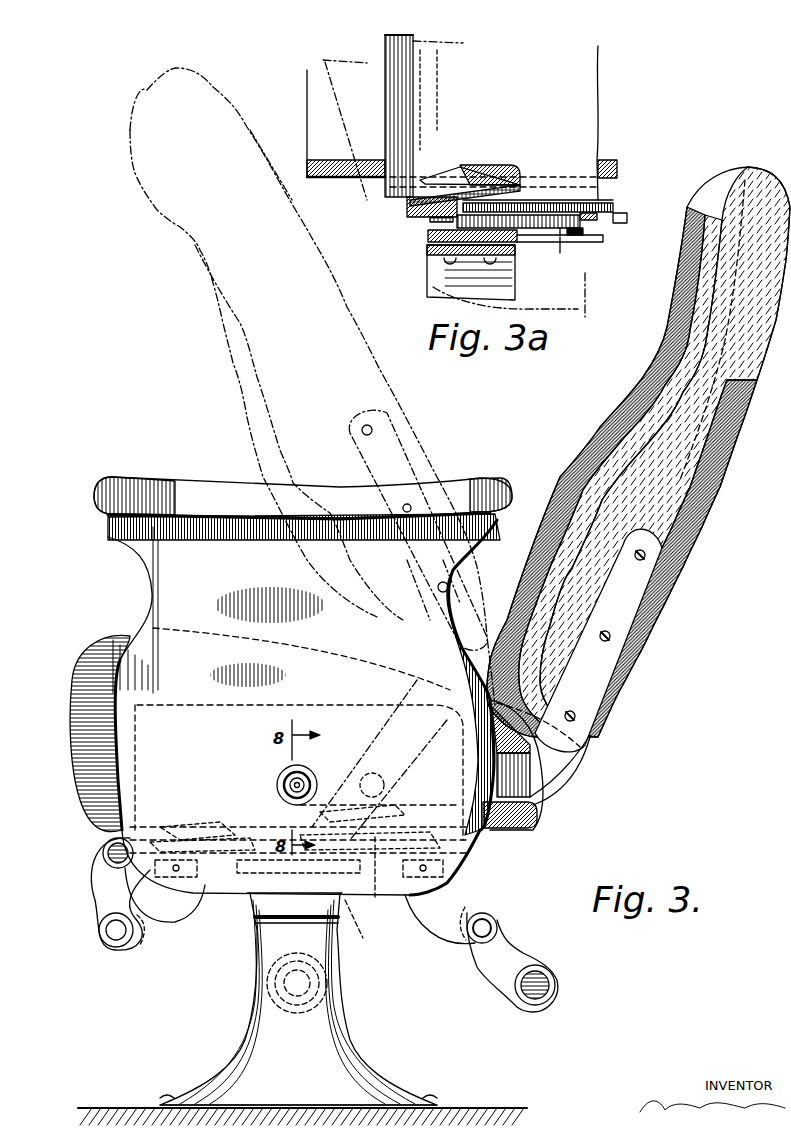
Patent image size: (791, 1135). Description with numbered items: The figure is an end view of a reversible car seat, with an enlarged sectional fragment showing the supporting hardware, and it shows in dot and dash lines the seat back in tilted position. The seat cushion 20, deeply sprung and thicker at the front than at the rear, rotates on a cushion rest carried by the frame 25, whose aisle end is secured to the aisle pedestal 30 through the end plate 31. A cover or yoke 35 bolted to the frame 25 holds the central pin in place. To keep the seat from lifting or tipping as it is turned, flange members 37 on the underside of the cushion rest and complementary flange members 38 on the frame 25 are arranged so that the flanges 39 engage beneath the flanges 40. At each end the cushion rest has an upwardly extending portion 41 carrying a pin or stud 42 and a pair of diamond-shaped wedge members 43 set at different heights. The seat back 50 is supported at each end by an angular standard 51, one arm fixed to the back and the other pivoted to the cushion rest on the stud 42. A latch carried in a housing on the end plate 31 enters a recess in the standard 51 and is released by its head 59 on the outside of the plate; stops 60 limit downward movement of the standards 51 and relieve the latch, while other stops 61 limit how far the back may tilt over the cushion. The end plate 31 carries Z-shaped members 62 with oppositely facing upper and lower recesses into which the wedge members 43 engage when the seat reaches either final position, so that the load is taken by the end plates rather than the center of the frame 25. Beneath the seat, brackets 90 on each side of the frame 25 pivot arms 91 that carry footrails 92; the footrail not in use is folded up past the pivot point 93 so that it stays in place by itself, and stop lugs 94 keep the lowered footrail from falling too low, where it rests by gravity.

In FIG. 3A, the seat cushion 20 is at (308, 105).
In FIG. 3, the seat cushion 20 is at (112, 640).
In FIG. 3A, the frame 25 is at (560, 237).
In FIG. 3, the aisle pedestal 30 is at (252, 1040).
In FIG. 3A, the end plate 31 is at (305, 73).
In FIG. 3, the end plate 31 is at (187, 577).
In FIG. 3, the cover or yoke 35 is at (363, 931).
In FIG. 3A, the flange member 37 is at (602, 210).
In FIG. 3A, the flange member 38 is at (457, 235).
In FIG. 3A, the flange 39 is at (430, 220).
In FIG. 3A, the flange 40 is at (570, 223).
In FIG. 3A, the upwardly extending portion 41 is at (578, 100).
In FIG. 3, the pin or stud 42 is at (385, 795).
In FIG. 3A, the wedge member 43 is at (450, 177).
In FIG. 3, the wedge member 43 is at (165, 827).
In FIG. 3, the seat back 50 is at (667, 297).
In FIG. 3, the angular standard 51 is at (557, 773).
In FIG. 3, the latch head 59 is at (313, 770).
In FIG. 3, the stop 60 is at (480, 840).
In FIG. 3, the stop 61 is at (376, 884).
In FIG. 3A, the Z-shaped member 62 is at (503, 167).
In FIG. 3, the Z-shaped member 62 is at (190, 823).
In FIG. 3A, the bracket 90 is at (447, 263).
In FIG. 3, the bracket 90 is at (163, 923).
In FIG. 3, the arm 91 is at (102, 905).
In FIG. 3, the footrail 92 is at (105, 853).
In FIG. 3, the pivot point 93 is at (115, 932).
In FIG. 3, the stop lug 94 is at (137, 928).